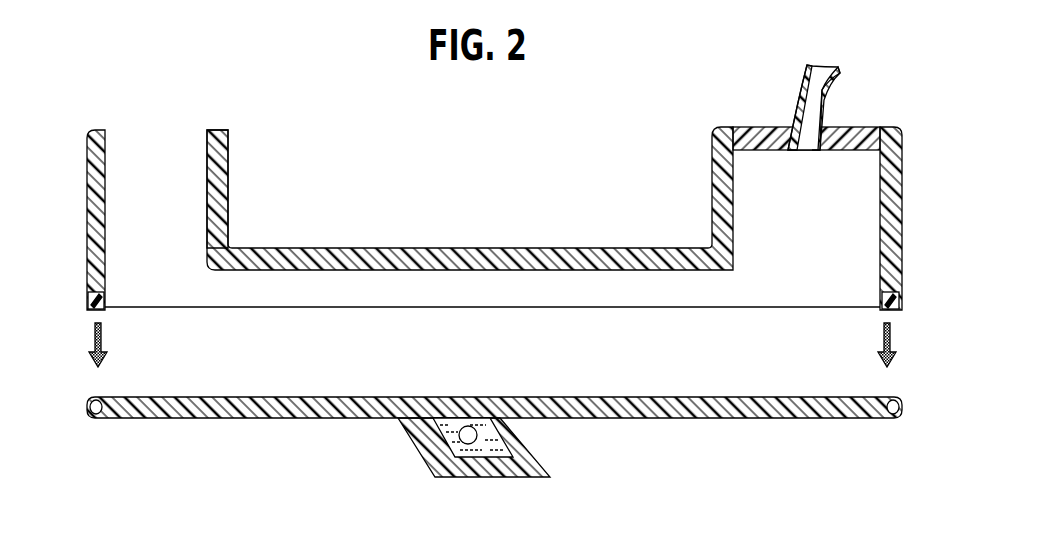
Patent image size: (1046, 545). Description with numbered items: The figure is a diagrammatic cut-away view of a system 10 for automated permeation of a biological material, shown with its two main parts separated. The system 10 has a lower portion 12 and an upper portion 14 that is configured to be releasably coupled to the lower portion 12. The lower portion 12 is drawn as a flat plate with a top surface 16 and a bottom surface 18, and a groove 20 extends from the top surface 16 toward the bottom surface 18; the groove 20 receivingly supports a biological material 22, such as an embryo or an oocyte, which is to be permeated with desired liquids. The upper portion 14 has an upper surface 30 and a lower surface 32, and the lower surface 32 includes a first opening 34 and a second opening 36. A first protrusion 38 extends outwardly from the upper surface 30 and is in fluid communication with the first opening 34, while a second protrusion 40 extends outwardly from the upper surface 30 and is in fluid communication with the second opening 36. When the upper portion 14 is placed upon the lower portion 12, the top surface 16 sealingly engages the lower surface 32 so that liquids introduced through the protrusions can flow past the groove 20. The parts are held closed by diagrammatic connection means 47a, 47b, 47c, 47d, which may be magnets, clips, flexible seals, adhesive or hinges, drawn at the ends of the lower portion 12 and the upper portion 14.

The system 10 is at (708, 96).
The lower portion 12 is at (718, 418).
The upper portion 14 is at (904, 203).
The top surface 16 is at (888, 396).
The bottom surface 18 is at (892, 420).
The groove 20 is at (443, 437).
The biological material 22 is at (478, 440).
The upper surface 30 is at (348, 248).
The lower surface 32 is at (93, 311).
The first opening 34 is at (182, 310).
The second opening 36 is at (862, 310).
The first protrusion 38 is at (228, 157).
The second protrusion 40 is at (904, 142).
The connection means 47a is at (93, 301).
The connection means 47b is at (92, 412).
The connection means 47c is at (899, 299).
The connection means 47d is at (903, 405).